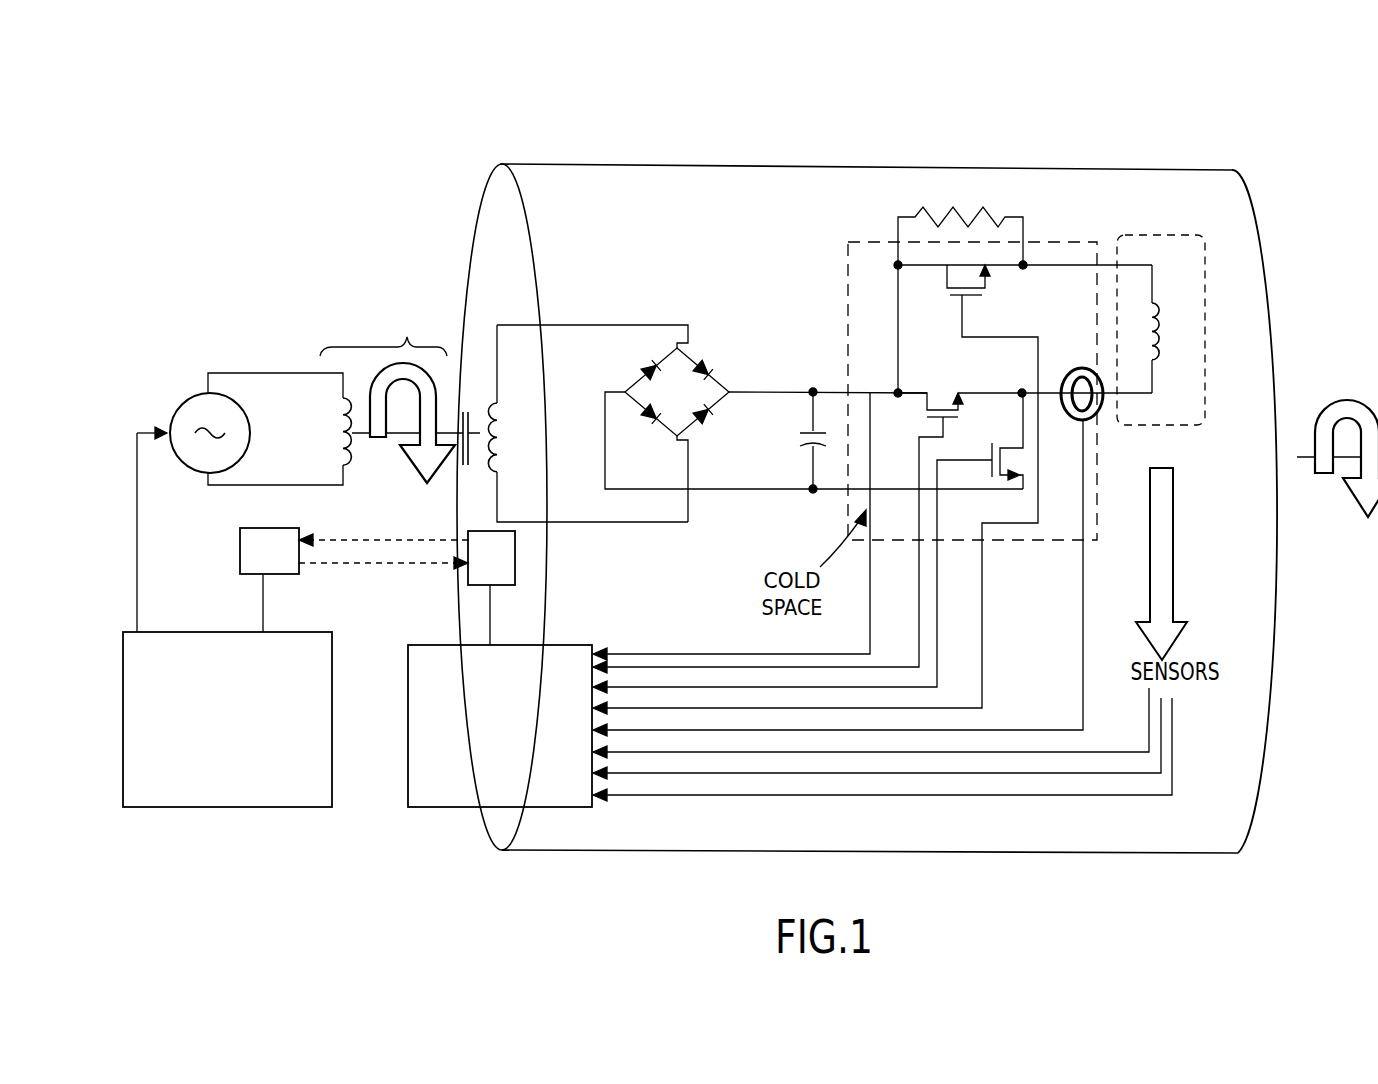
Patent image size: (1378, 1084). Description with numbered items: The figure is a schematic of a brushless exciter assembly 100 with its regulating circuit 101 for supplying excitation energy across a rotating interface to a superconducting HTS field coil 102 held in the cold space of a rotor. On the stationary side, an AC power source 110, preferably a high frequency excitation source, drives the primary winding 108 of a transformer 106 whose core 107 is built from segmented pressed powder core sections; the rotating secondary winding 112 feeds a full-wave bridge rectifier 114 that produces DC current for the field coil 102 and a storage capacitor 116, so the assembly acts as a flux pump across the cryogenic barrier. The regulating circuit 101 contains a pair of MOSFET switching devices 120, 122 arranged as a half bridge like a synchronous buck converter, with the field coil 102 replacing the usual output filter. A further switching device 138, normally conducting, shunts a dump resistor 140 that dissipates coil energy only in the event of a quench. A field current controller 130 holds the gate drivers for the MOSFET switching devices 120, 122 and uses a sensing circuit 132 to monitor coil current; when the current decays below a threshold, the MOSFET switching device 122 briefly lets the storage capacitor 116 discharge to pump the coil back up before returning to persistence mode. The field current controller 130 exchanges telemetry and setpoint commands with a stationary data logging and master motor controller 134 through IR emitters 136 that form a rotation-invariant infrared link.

The brushless exciter assembly 100 is at (1262, 173).
The regulating circuit 101 is at (1077, 240).
The HTS field coil 102 is at (1197, 335).
The transformer 106 is at (394, 384).
The core 107 is at (453, 463).
The primary winding 108 is at (340, 436).
The AC power source 110 is at (183, 395).
The secondary winding 112 is at (523, 460).
The full-wave bridge rectifier 114 is at (723, 357).
The storage capacitor 116 is at (802, 440).
The MOSFET switching device 120 is at (950, 390).
The MOSFET switching device 122 is at (1023, 477).
The field current controller 130 is at (433, 808).
The sensing circuit 132 is at (1100, 414).
The data logging and master motor controller 134 is at (300, 808).
The IR emitters 136 is at (287, 575).
The switching device 138 is at (955, 300).
The dump resistor 140 is at (988, 204).